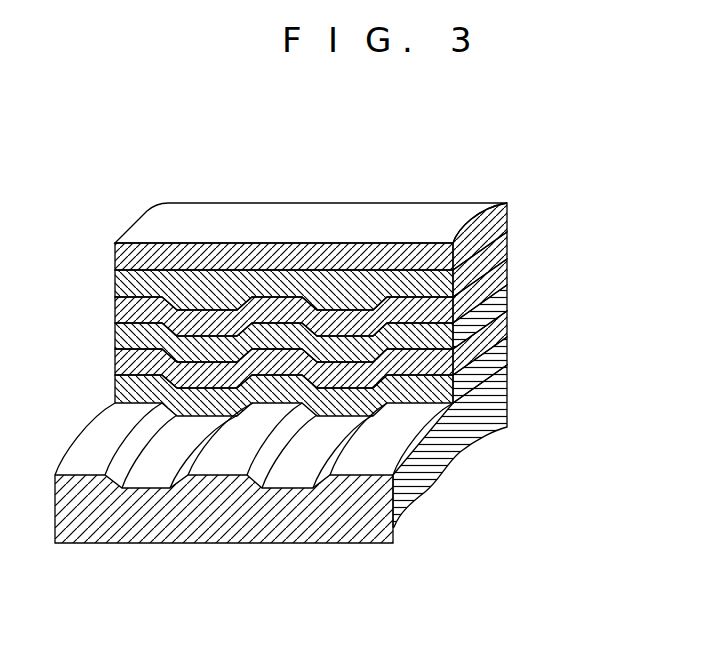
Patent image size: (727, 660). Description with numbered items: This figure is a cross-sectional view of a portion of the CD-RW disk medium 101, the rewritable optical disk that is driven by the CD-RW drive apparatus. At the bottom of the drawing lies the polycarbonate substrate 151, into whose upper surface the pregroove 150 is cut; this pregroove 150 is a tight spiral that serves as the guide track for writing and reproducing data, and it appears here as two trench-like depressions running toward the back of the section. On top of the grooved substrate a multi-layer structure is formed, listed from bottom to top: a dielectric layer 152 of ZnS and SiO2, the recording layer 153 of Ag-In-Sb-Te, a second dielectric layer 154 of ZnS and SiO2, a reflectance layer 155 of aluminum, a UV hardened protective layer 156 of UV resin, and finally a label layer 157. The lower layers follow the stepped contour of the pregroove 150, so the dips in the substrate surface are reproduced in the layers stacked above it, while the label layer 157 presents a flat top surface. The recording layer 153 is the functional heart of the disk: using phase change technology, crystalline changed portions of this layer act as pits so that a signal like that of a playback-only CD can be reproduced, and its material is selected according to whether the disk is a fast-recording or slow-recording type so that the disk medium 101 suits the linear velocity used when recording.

The CD-RW disk medium 101 is at (328, 195).
The pregroove 150 is at (278, 492).
The polycarbonate substrate 151 is at (508, 397).
The dielectric layer 152 is at (508, 352).
The recording layer 153 is at (508, 323).
The dielectric layer 154 is at (508, 300).
The reflectance layer 155 is at (508, 272).
The UV hardened protective layer 156 is at (508, 243).
The label layer 157 is at (508, 217).